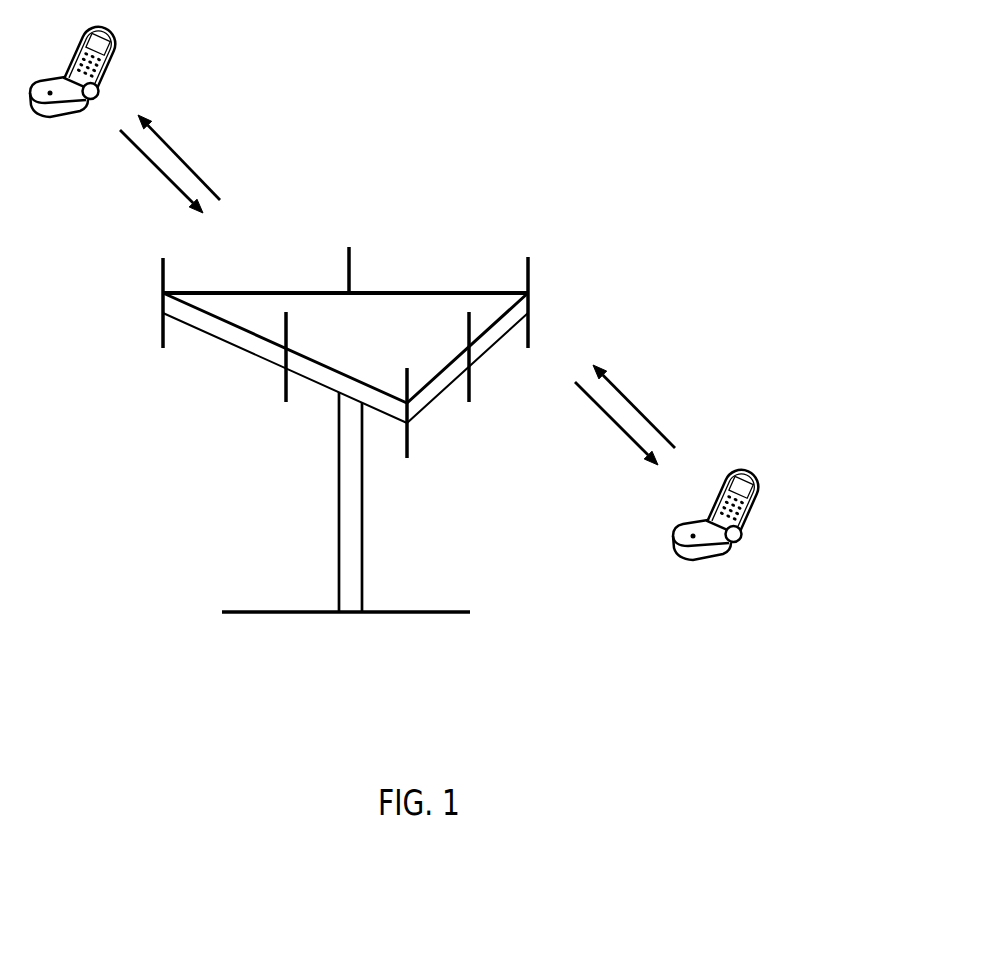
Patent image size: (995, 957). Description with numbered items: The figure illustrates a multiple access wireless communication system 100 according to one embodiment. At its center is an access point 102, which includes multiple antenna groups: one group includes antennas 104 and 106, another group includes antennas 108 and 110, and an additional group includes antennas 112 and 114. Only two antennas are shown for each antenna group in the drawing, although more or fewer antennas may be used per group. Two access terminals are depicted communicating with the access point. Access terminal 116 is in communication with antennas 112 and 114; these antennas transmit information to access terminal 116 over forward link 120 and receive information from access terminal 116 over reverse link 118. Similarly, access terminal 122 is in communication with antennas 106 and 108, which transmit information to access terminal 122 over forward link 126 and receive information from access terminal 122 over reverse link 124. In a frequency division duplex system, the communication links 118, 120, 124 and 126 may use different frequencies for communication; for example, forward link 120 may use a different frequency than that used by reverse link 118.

The multiple access wireless communication system 100 is at (600, 60).
The access point 102 is at (349, 614).
The antenna 104 is at (529, 268).
The antenna 106 is at (469, 398).
The antenna 108 is at (407, 455).
The antenna 110 is at (286, 398).
The antenna 112 is at (164, 268).
The antenna 114 is at (350, 256).
The access terminal 116 is at (104, 34).
The reverse link 118 is at (180, 153).
The forward link 120 is at (160, 173).
The access terminal 122 is at (750, 475).
The reverse link 124 is at (618, 428).
The forward link 126 is at (637, 410).